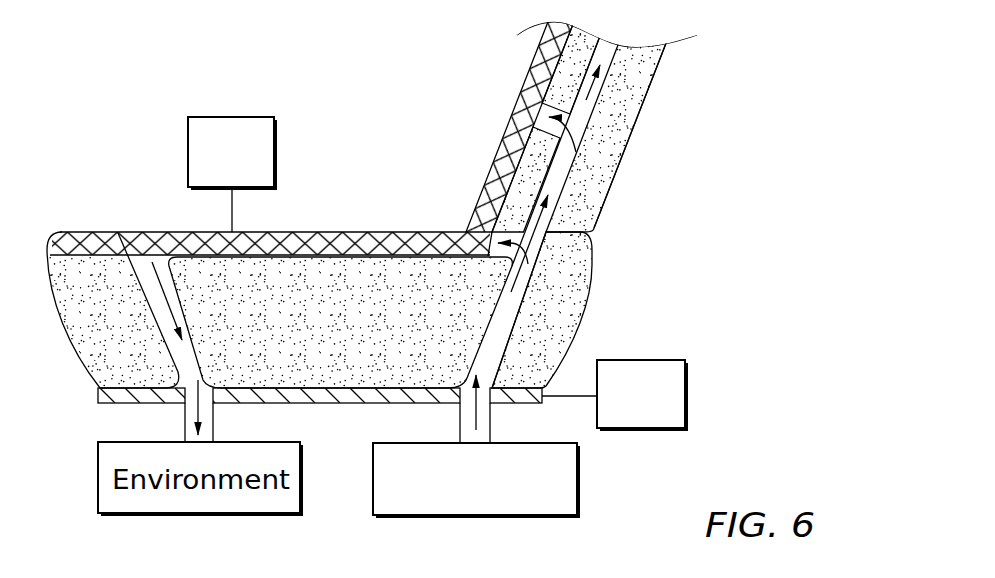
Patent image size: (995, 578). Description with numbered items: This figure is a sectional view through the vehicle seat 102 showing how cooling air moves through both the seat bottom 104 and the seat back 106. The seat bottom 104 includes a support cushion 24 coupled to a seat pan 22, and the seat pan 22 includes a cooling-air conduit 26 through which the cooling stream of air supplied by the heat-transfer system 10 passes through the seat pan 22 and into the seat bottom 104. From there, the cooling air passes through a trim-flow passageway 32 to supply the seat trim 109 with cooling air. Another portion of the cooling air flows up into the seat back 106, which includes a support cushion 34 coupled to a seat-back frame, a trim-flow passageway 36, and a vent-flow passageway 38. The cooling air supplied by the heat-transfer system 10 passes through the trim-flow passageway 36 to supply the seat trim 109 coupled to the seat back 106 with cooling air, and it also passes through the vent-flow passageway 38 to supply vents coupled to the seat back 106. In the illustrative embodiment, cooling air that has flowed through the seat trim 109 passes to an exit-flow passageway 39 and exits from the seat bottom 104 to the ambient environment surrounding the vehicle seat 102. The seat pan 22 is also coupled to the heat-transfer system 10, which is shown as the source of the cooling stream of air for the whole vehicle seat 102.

The heat-transfer system 10 is at (583, 478).
The seat pan 22 is at (688, 392).
The support cushion 24 is at (192, 273).
The cooling-air conduit 26 is at (459, 415).
The trim-flow passageway 32 is at (530, 295).
The support cushion 34 is at (554, 68).
The trim-flow passageway 36 is at (576, 175).
The vent-flow passageway 38 is at (610, 97).
The exit-flow passageway 39 is at (156, 322).
The vehicle seat 102 is at (429, 226).
The seat bottom 104 is at (596, 258).
The seat back 106 is at (664, 65).
The seat trim 109 is at (247, 116).